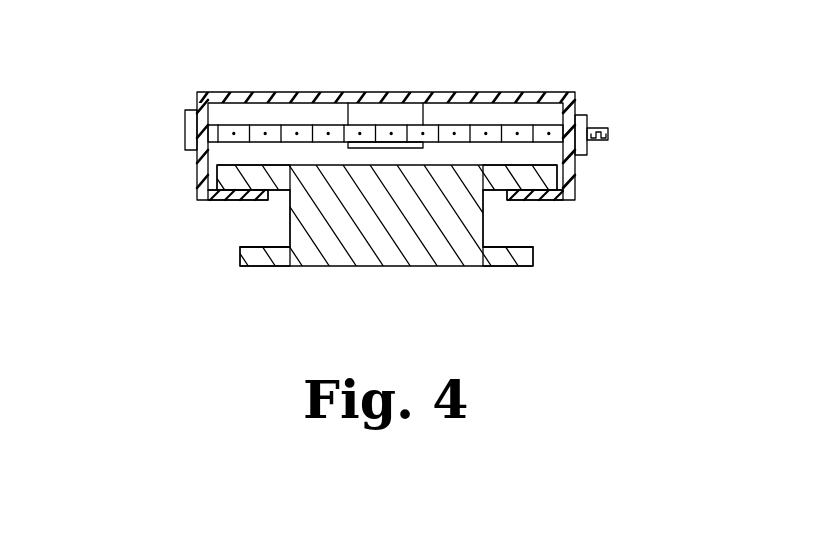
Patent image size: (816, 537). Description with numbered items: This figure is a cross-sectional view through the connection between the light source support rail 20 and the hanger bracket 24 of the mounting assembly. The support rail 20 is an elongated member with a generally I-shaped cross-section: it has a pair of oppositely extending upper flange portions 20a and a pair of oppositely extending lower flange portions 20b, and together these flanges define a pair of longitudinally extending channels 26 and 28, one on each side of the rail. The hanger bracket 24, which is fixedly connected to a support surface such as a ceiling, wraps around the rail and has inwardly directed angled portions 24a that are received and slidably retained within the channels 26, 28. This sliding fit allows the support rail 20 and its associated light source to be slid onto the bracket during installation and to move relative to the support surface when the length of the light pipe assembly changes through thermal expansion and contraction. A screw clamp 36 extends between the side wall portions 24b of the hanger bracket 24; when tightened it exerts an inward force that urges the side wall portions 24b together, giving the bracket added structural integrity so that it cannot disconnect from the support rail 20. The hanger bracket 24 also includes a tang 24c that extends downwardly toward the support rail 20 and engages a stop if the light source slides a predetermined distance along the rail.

The light source support rail 20 is at (432, 258).
The upper flange portions 20a is at (243, 176).
The lower flange portions 20b is at (248, 255).
The hanger bracket 24 is at (255, 92).
The angled portions 24a is at (198, 198).
The side wall portions 24b is at (190, 125).
The tang 24c is at (380, 122).
The channel 26 is at (290, 220).
The channel 28 is at (485, 207).
The screw clamp 36 is at (522, 130).